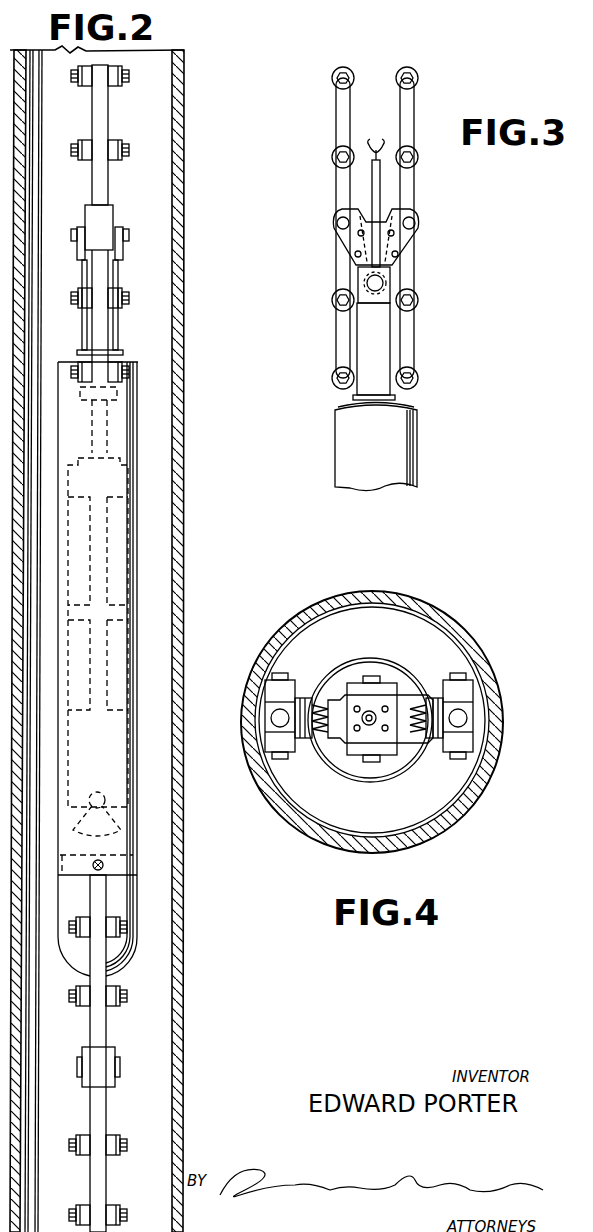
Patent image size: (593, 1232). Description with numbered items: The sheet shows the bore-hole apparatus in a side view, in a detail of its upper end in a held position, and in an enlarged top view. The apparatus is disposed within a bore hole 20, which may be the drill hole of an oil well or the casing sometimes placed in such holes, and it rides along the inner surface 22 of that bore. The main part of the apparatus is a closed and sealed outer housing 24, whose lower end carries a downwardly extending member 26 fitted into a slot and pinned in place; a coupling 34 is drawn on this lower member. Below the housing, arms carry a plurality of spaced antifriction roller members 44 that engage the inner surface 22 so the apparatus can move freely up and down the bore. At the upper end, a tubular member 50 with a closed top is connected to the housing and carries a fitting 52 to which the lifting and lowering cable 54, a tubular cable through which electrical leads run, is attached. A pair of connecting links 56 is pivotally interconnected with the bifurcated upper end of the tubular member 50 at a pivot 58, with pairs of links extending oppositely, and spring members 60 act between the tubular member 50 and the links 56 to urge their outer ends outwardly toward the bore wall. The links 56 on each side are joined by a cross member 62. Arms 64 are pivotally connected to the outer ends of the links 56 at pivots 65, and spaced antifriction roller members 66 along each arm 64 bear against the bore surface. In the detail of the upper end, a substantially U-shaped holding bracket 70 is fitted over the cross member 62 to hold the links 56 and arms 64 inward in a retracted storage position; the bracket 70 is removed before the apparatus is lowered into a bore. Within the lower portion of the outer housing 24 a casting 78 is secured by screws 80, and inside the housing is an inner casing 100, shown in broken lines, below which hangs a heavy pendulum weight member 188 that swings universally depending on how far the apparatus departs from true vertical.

In FIG. 2, the bore hole 20 is at (182, 535).
In FIG. 4, the bore hole 20 is at (468, 648).
In FIG. 2, the inner surface of the bore hole 22 is at (172, 470).
In FIG. 4, the inner surface of the bore hole 22 is at (352, 609).
In FIG. 2, the main outer housing 24 is at (140, 418).
In FIG. 3, the main outer housing 24 is at (416, 452).
In FIG. 4, the main outer housing 24 is at (331, 663).
In FIG. 2, the downwardly extending member 26 is at (109, 1020).
In FIG. 2, the coupling 34 is at (119, 1068).
In FIG. 2, the antifriction roller members 44 is at (110, 915).
In FIG. 2, the tubular member 50 is at (112, 320).
In FIG. 3, the tubular member 50 is at (385, 338).
In FIG. 3, the fitting 52 is at (391, 276).
In FIG. 2, the lifting and lowering cable 54 is at (100, 213).
In FIG. 3, the lifting and lowering cable 54 is at (372, 175).
In FIG. 4, the connecting links 56 is at (333, 690).
In FIG. 2, the pivotal interconnection of links with tubular member 58 is at (123, 240).
In FIG. 4, the pivotal interconnection of links with tubular member 58 is at (371, 762).
In FIG. 4, the spring members 60 is at (320, 700).
In FIG. 3, the cross member 62 is at (350, 230).
In FIG. 4, the cross member 62 is at (302, 744).
In FIG. 3, the arms 64 is at (337, 170).
In FIG. 4, the arms 64 is at (271, 718).
In FIG. 3, the pivotal interconnection of arms with links 65 is at (337, 221).
In FIG. 2, the antifriction roller members 66 is at (88, 88).
In FIG. 3, the antifriction roller members 66 is at (338, 91).
In FIG. 4, the antifriction roller members 66 is at (270, 695).
In FIG. 3, the holding bracket 70 is at (393, 212).
In FIG. 2, the casting 78 is at (131, 897).
In FIG. 2, the screws 80 is at (103, 862).
In FIG. 2, the inner casing 100 is at (142, 641).
In FIG. 2, the pendulum weight member 188 is at (124, 813).